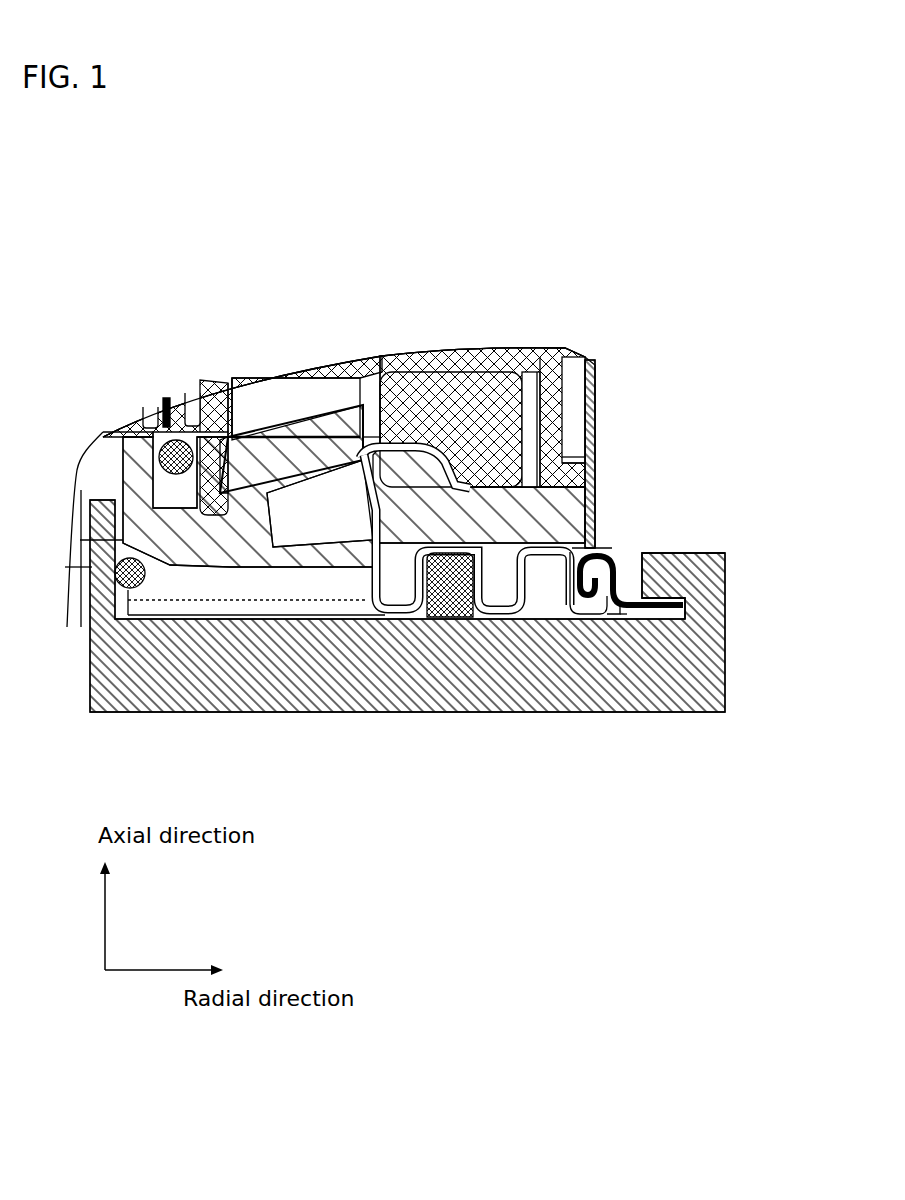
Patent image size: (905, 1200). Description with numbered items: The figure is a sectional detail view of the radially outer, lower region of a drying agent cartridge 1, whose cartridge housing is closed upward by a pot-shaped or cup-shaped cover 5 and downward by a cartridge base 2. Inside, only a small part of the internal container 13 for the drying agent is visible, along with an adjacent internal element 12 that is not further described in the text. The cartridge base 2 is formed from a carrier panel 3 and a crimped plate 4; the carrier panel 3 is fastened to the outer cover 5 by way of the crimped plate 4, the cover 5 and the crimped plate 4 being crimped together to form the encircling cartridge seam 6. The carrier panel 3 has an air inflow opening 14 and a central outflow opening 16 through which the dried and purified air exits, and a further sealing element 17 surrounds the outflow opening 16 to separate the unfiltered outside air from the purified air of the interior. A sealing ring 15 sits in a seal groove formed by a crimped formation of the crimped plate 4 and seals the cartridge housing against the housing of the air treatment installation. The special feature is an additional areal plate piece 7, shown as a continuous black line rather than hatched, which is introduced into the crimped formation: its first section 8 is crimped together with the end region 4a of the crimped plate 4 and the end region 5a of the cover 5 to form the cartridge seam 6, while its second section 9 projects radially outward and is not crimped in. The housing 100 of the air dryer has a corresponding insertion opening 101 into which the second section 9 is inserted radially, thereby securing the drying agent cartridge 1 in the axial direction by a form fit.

The drying agent cartridge 1 is at (140, 358).
The cartridge base 2 is at (629, 488).
The carrier panel 3 is at (597, 487).
The crimped plate 4 is at (372, 560).
The end region of the crimped plate 4a is at (605, 612).
The cover 5 is at (593, 377).
The end region of the cartridge housing cover 5a is at (577, 617).
The cartridge seam 6 is at (620, 551).
The plate piece 7 is at (627, 613).
The first section of the plate piece 8 is at (583, 598).
The second section of the plate piece 9 is at (670, 603).
The elastic member 12 is at (449, 348).
The internal container for the drying agent 13 is at (408, 357).
The air inflow opening 14 is at (300, 553).
The sealing ring 15 is at (450, 592).
The central outflow opening 16 is at (82, 525).
The further sealing element 17 is at (130, 588).
The housing of the air dryer 100 is at (463, 677).
The insertion opening 101 is at (652, 617).